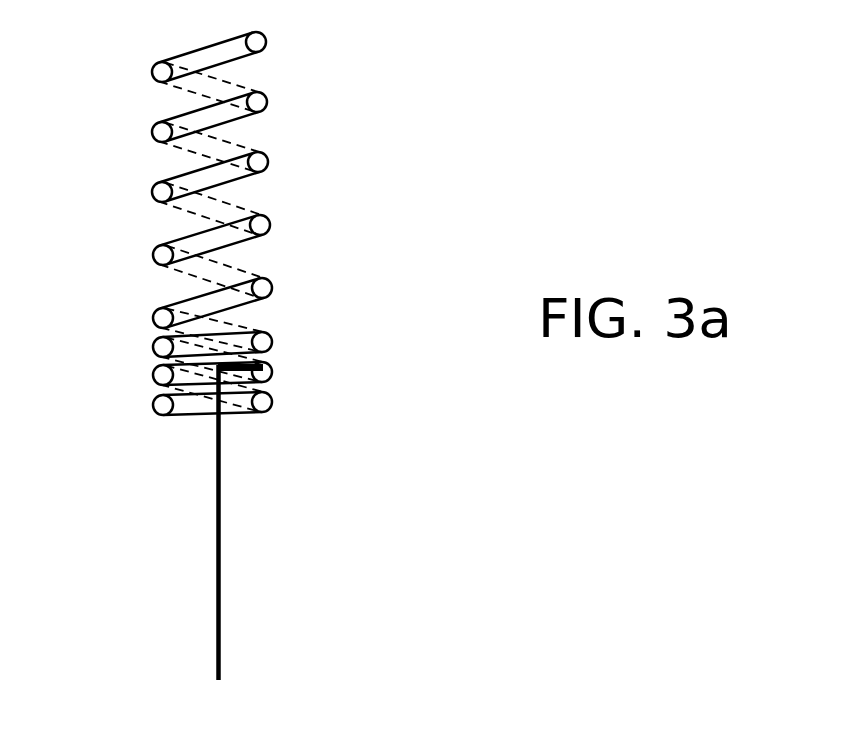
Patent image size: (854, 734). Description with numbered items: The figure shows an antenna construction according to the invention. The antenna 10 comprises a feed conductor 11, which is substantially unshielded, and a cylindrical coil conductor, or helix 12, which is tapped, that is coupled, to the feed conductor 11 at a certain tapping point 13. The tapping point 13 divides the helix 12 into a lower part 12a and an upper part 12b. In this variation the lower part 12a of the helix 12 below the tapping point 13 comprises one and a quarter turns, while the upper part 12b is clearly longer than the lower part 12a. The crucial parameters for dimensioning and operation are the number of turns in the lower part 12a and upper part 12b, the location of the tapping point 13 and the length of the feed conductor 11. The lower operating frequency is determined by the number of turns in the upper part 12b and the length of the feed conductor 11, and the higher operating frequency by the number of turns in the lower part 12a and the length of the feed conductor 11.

The antenna 10 is at (324, 478).
The feed conductor 11 is at (218, 538).
The helix 12 is at (333, 28).
The lower part of the helix 12a is at (145, 365).
The upper part of the helix 12b is at (130, 25).
The tapping point 13 is at (268, 371).